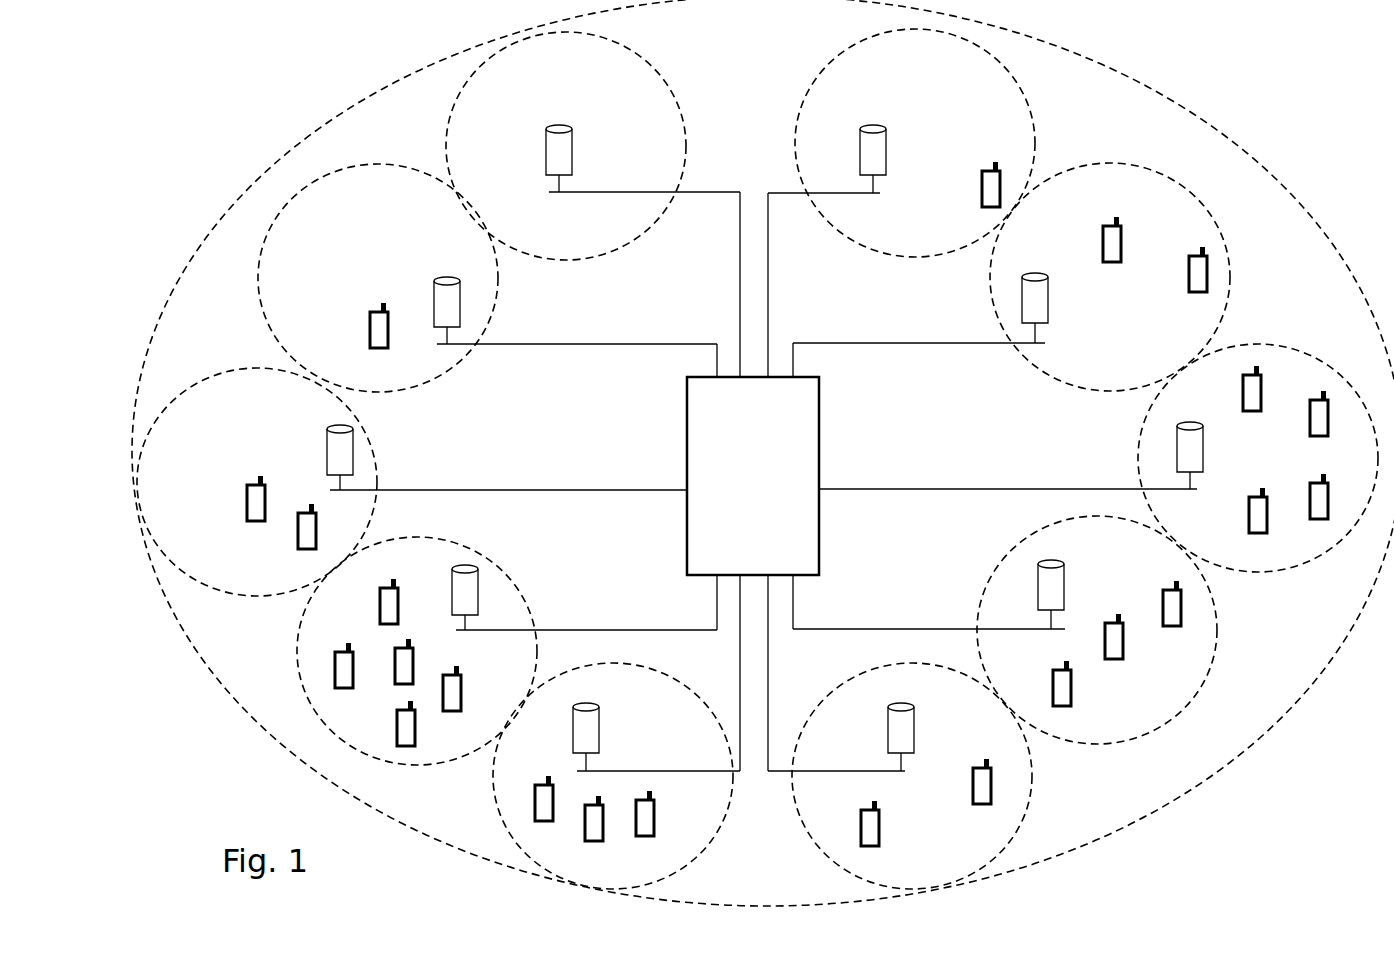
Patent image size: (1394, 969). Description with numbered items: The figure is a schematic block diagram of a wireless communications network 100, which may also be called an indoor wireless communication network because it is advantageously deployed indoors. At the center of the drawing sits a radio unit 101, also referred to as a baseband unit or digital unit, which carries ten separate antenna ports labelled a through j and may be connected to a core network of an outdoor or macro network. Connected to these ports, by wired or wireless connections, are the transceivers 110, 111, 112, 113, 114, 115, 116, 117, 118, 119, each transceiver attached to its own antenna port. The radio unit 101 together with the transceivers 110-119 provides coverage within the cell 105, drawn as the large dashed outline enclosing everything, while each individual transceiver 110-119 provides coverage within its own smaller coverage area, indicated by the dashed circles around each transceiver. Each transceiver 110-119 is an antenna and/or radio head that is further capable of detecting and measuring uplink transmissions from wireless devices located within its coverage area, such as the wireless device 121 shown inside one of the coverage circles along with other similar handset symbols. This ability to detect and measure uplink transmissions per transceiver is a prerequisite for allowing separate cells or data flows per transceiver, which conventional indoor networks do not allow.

The wireless communications network 100 is at (1264, 823).
The radio unit 101 is at (776, 492).
The cell 105 is at (1200, 115).
The transceiver 110 is at (572, 168).
The transceiver 111 is at (460, 320).
The transceiver 112 is at (353, 468).
The transceiver 113 is at (478, 608).
The transceiver 114 is at (599, 746).
The transceiver 115 is at (914, 746).
The transceiver 116 is at (1064, 603).
The transceiver 117 is at (1203, 465).
The transceiver 118 is at (1048, 316).
The transceiver 119 is at (886, 168).
The wireless device 121 is at (1208, 258).